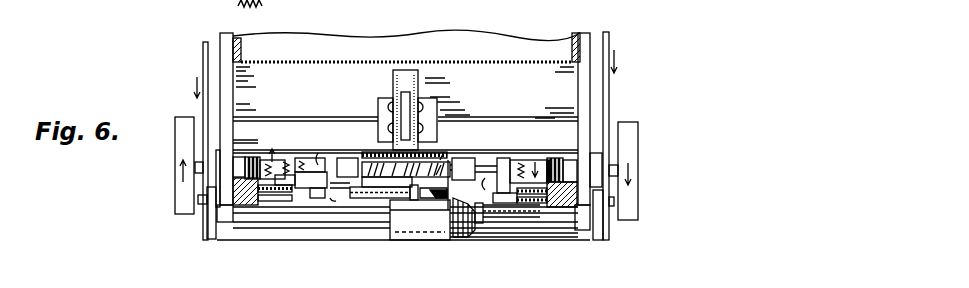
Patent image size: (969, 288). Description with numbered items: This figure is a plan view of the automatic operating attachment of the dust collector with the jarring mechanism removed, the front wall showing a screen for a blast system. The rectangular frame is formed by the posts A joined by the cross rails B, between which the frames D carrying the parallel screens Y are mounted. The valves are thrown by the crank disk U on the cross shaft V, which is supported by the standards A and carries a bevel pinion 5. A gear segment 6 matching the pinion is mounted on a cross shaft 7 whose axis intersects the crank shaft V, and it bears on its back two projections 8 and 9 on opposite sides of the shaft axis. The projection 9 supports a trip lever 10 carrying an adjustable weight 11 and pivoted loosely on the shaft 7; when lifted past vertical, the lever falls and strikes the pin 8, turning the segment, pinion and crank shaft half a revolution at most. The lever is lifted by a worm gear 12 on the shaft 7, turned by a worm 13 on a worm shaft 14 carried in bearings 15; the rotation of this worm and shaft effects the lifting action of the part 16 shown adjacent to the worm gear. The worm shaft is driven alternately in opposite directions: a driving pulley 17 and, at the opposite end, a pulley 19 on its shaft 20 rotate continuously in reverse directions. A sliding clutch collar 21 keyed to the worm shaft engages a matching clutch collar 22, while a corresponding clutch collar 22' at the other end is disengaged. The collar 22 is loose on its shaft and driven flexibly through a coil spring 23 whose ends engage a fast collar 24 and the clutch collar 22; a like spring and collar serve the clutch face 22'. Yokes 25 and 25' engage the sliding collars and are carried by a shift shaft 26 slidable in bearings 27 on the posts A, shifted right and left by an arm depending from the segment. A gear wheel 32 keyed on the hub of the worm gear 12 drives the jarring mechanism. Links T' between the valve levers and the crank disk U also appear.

The bevel pinion 5 is at (471, 226).
The gear segment 6 is at (507, 203).
The cross shaft 7 is at (420, 73).
The projection 8 is at (445, 180).
The projection 9 is at (363, 192).
The trip lever 10 is at (342, 158).
The adjustable weight 11 is at (301, 185).
The worm gear 12 is at (452, 165).
The worm 13 is at (474, 169).
The worm shaft 14 is at (489, 158).
The bearings 15 is at (347, 167).
The gear 16 is at (432, 158).
The driving pulley 17 is at (640, 212).
The pulley 19 is at (175, 198).
The shaft 20 is at (195, 168).
The sliding clutch collar 21 is at (310, 158).
The clutch collar 22 is at (551, 151).
The clutch collar 22' is at (278, 149).
The coil spring 23 is at (257, 158).
The fast collar 24 is at (243, 157).
The yoke 25 is at (502, 148).
The yoke 25' is at (330, 132).
The shift shaft 26 is at (340, 197).
The bearings 27 is at (278, 200).
The gear wheel 32 is at (368, 152).
The posts A is at (250, 202).
The cross rails B is at (228, 108).
The frames D is at (243, 48).
The guide bar T' is at (412, 135).
The crank disk U is at (205, 239).
The cross shaft V is at (517, 217).
The screens Y is at (333, 62).